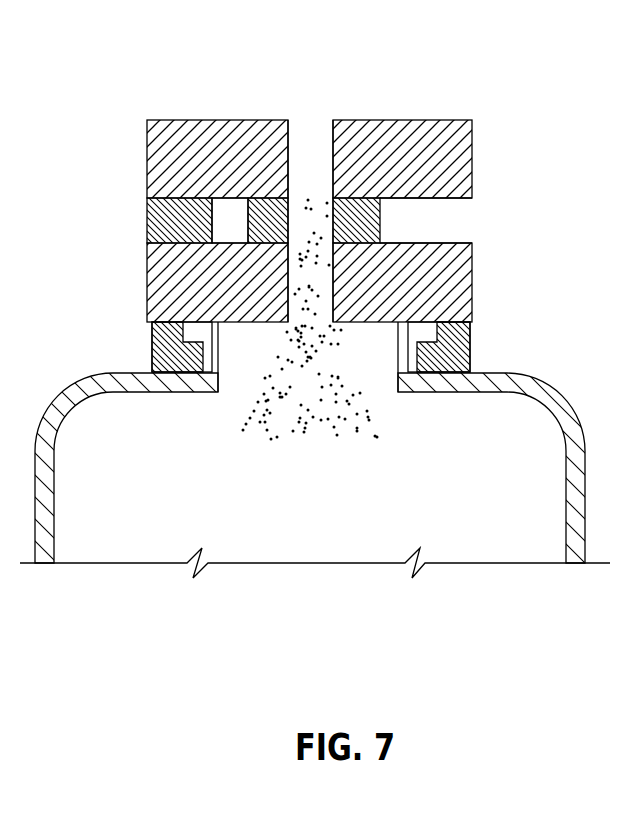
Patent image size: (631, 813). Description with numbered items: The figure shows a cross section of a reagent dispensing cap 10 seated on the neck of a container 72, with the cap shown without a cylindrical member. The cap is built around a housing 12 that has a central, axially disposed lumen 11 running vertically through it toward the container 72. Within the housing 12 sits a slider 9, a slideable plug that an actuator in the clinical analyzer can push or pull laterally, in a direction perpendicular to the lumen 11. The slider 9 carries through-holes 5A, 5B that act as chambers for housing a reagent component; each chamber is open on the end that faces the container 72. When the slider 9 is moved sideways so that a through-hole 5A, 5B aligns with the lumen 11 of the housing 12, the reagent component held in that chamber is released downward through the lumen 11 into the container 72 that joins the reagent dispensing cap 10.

The reagent dispensing cap 10 is at (104, 71).
The lumen 11 is at (309, 128).
The housing 12 is at (413, 135).
The slider 9 is at (147, 222).
The through-hole 5B is at (212, 220).
The through-hole 5A is at (383, 220).
The container 72 is at (360, 512).